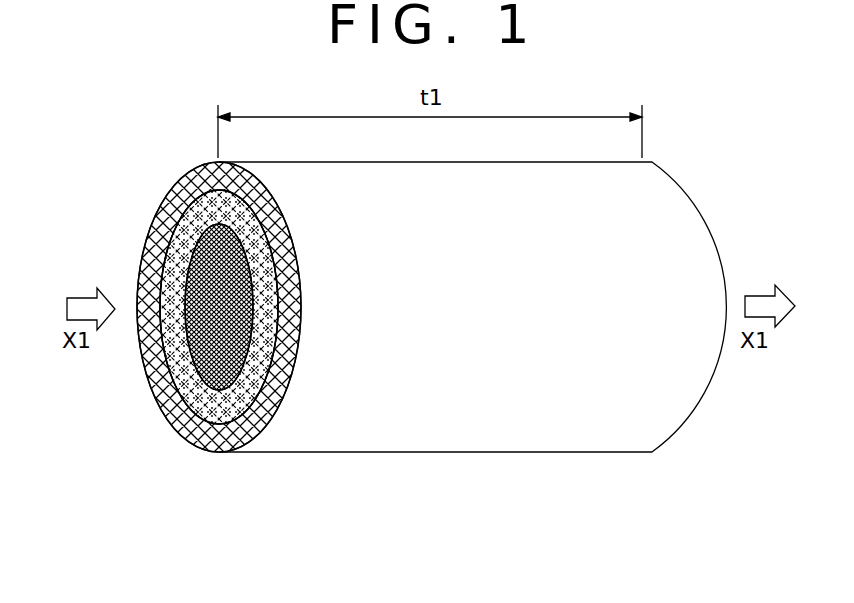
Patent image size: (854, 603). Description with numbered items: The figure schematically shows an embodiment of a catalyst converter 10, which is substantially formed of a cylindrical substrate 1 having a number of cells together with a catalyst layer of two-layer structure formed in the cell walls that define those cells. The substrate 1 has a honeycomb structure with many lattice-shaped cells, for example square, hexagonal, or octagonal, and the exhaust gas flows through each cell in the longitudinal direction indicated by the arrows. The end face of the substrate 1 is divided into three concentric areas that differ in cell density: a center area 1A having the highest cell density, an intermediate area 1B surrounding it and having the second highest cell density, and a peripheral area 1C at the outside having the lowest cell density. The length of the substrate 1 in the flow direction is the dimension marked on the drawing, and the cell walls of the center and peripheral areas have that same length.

The catalyst converter 10 is at (510, 467).
The cylindrical substrate 1 is at (222, 363).
The center area 1A is at (183, 433).
The intermediate area 1B is at (220, 404).
The peripheral area 1C is at (241, 371).